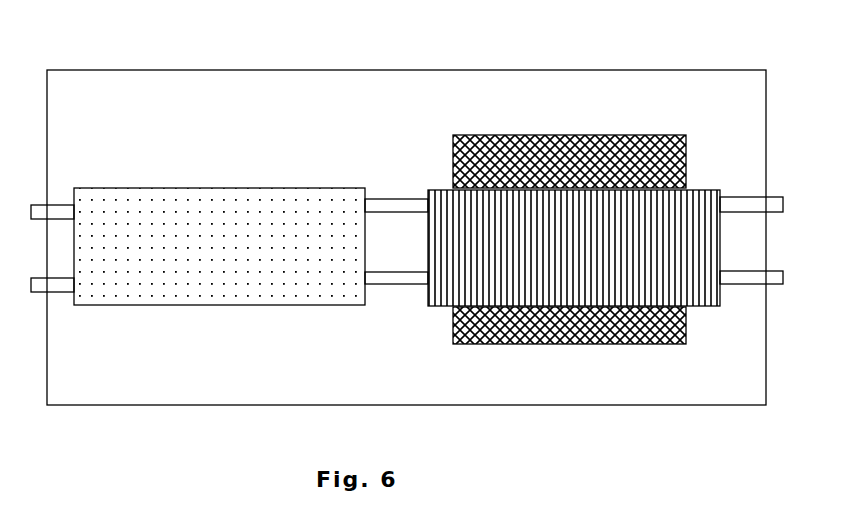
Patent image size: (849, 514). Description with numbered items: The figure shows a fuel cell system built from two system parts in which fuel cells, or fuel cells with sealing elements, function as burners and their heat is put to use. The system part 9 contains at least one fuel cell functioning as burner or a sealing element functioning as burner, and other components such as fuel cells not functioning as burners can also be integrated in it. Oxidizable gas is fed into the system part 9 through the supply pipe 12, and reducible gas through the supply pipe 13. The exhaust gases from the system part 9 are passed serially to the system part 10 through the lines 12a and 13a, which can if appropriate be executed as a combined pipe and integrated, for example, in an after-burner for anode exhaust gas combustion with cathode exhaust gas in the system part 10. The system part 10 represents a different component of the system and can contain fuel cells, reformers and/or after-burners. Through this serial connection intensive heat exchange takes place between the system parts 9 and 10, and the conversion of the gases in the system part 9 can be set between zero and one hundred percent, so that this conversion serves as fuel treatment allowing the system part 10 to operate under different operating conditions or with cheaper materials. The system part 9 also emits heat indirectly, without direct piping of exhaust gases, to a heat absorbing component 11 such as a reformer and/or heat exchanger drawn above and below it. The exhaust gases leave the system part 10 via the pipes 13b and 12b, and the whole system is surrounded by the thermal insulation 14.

The system part 9 is at (648, 207).
The system part 10 is at (188, 195).
The heat absorbing component 11 is at (613, 317).
The supply pipe 12 is at (756, 196).
The line 12a is at (395, 199).
The pipe 12b is at (60, 205).
The supply pipe 13 is at (748, 278).
The line 13a is at (388, 282).
The pipe 13b is at (52, 289).
The thermal insulation 14 is at (150, 93).